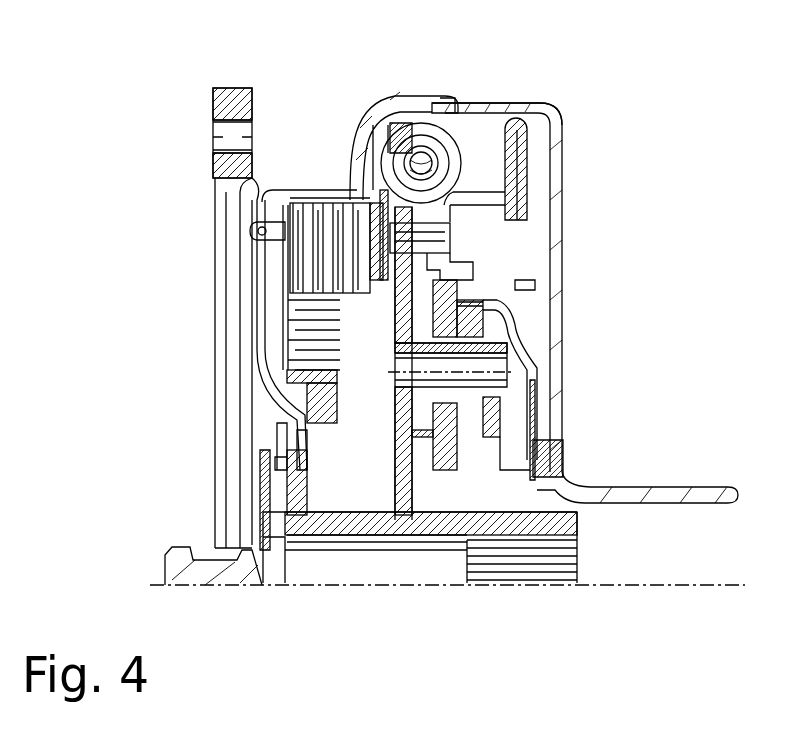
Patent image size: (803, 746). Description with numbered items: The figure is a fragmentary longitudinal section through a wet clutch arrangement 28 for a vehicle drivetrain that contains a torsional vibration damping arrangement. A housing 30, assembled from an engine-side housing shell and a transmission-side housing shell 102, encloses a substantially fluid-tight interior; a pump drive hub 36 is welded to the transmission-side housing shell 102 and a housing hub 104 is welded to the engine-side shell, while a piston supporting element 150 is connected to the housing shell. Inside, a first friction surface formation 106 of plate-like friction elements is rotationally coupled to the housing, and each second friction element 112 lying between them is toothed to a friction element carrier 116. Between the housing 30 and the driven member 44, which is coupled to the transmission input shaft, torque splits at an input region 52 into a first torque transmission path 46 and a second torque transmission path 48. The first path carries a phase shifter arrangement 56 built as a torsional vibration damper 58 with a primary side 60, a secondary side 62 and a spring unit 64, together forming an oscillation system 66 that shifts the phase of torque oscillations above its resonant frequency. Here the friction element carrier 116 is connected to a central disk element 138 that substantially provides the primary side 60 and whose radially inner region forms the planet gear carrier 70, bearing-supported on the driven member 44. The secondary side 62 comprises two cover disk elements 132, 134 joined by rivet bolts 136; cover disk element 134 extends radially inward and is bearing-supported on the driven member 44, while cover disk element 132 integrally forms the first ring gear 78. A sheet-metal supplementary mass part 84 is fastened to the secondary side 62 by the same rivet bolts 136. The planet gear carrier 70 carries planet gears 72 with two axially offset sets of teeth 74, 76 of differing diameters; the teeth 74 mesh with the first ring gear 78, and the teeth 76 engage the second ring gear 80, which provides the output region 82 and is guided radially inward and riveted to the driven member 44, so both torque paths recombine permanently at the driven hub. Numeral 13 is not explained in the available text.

The clutch plate pack 13 is at (330, 285).
The wet clutch arrangement 28 is at (598, 82).
The housing 30 is at (510, 112).
The pump drive hub 36 is at (695, 492).
The driven member 44 is at (503, 517).
The first torque transmission path 46 is at (490, 166).
The second torque transmission path 48 is at (345, 430).
The input region 52 is at (375, 142).
The phase shifter arrangement 56 is at (471, 128).
The torsional vibration damper 58 is at (414, 104).
The primary side 60 is at (520, 187).
The secondary side 62 is at (455, 125).
The spring unit 64 is at (383, 138).
The oscillation system 66 is at (355, 147).
The planet gear carrier 70 is at (375, 402).
The planet gears 72 is at (507, 400).
The teeth 74 is at (443, 480).
The teeth 76 is at (533, 455).
The first ring gear 78 is at (475, 262).
The second ring gear 80 is at (520, 283).
The output region 82 is at (545, 345).
The supplementary mass part 84 is at (528, 122).
The transmission-side housing shell 102 is at (556, 244).
The housing hub 104 is at (250, 240).
The first friction surface formation 106 is at (235, 207).
The second friction element 112 is at (320, 330).
The friction element carrier 116 is at (300, 385).
The cover disk element 132 is at (545, 112).
The cover disk element 134 is at (357, 190).
The rivet bolts 136 is at (300, 262).
The central disk element 138 is at (300, 365).
The piston supporting element 150 is at (290, 480).